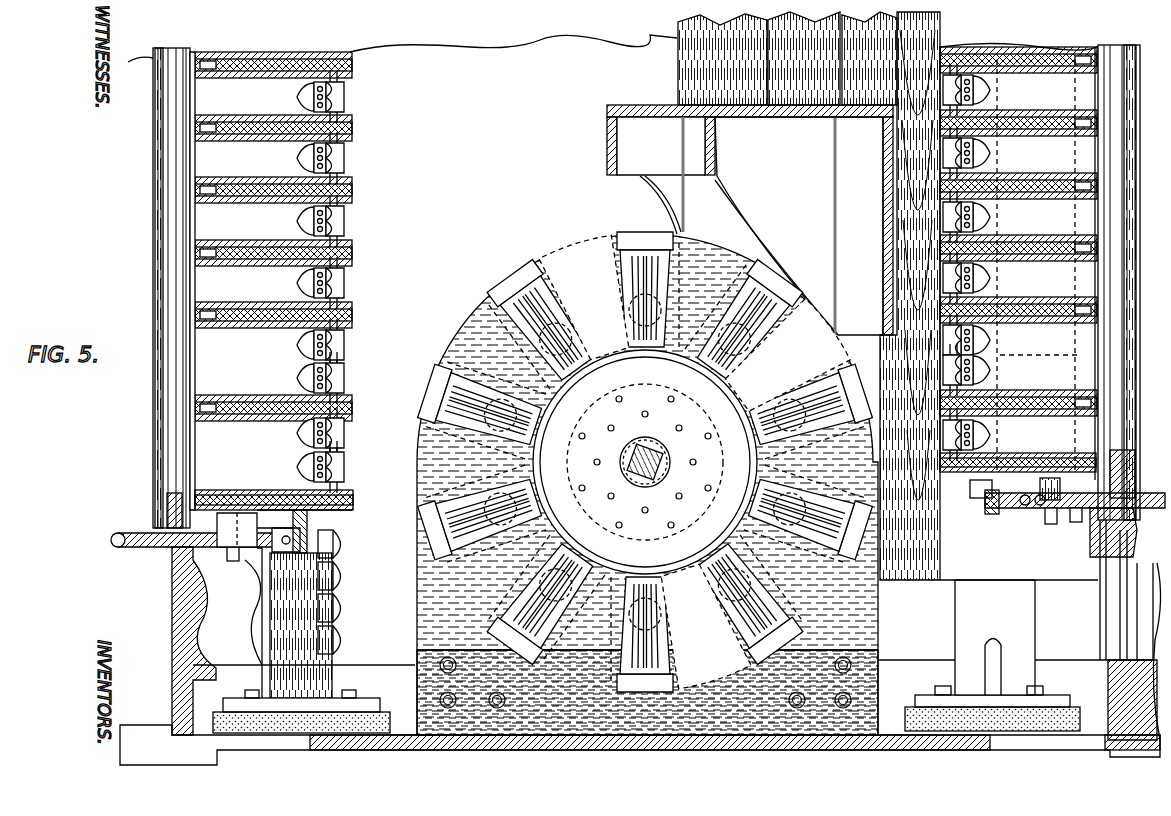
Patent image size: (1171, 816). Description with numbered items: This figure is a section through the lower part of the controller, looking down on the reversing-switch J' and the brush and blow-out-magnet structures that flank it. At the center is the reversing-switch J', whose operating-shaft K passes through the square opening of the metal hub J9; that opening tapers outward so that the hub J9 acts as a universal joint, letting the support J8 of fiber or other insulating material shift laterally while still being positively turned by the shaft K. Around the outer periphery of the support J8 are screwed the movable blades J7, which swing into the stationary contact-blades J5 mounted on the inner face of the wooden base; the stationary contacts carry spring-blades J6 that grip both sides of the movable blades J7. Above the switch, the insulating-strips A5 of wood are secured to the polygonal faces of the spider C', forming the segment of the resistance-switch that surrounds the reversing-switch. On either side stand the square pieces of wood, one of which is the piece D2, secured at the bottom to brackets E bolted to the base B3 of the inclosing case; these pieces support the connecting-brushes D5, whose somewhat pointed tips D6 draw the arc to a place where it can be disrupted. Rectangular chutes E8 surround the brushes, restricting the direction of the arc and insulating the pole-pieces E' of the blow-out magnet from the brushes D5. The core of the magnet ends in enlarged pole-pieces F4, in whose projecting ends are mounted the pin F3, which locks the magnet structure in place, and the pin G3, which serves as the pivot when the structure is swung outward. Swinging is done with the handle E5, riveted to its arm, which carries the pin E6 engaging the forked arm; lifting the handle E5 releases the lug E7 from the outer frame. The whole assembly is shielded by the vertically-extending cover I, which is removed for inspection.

The vertically-extending cover I is at (160, 240).
The pole-pieces E' is at (643, 256).
The rectangular chutes E8 is at (633, 262).
The connecting-brushes D5 is at (345, 158).
The tips D6 is at (300, 283).
The enlarged pole-pieces F4 is at (352, 496).
The handle E5 is at (116, 533).
The pin E6 is at (308, 522).
The lug E7 is at (237, 560).
The pin F3 is at (248, 575).
The square piece of wood D2 is at (310, 598).
The brackets E is at (683, 656).
The base B3 is at (812, 740).
The reversing-switch J' is at (647, 467).
The stationary contact-blades J5 is at (645, 240).
The spring-blades J6 is at (510, 300).
The movable blades J7 is at (645, 462).
The support J8 is at (645, 462).
The hub J9 is at (622, 462).
The operating-shaft K is at (668, 462).
The insulating-strips A5 is at (690, 75).
The spider C' is at (750, 220).
The pin G3 is at (1055, 515).